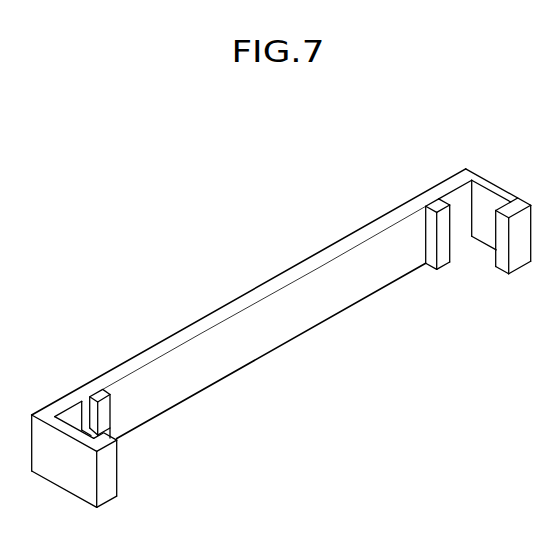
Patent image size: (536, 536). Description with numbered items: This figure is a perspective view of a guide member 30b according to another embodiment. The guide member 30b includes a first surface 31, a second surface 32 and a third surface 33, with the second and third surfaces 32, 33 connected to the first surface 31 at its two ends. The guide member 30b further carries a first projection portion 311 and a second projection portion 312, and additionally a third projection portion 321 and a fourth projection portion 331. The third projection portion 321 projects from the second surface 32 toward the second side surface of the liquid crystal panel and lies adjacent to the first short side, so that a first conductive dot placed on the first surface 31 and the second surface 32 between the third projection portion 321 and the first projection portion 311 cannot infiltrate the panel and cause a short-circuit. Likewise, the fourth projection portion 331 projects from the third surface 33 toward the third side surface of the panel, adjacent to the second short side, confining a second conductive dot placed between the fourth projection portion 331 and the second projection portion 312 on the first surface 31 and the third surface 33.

The guide member 30b is at (277, 130).
The first surface 31 is at (272, 338).
The first projection portion 311 is at (105, 410).
The second projection portion 312 is at (448, 218).
The second surface 32 is at (111, 425).
The third projection portion 321 is at (118, 468).
The third surface 33 is at (485, 233).
The fourth projection portion 331 is at (503, 264).